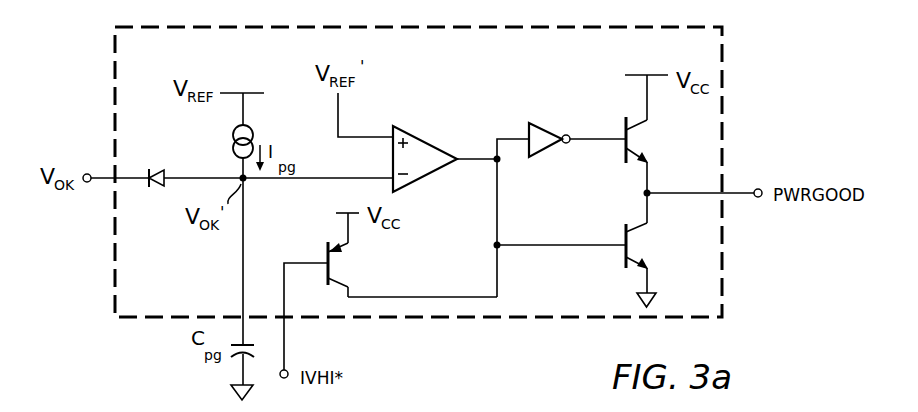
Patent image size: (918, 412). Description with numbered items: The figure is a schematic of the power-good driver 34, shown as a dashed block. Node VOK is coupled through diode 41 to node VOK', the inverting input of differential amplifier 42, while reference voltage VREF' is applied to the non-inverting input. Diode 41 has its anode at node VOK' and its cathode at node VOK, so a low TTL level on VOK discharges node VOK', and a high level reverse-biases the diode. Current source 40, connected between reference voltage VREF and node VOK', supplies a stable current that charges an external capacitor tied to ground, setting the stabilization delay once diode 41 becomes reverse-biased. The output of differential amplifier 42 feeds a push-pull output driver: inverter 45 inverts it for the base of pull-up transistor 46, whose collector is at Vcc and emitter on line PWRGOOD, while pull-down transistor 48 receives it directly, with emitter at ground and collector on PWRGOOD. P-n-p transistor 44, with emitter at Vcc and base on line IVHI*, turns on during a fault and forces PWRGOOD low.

The power-good driver 34 is at (455, 319).
The current source 40 is at (254, 129).
The diode 41 is at (152, 168).
The differential amplifier 42 is at (421, 136).
The p-n-p transistor 44 is at (325, 249).
The inverter 45 is at (545, 122).
The pull-up transistor 46 is at (622, 151).
The pull-down transistor 48 is at (622, 261).